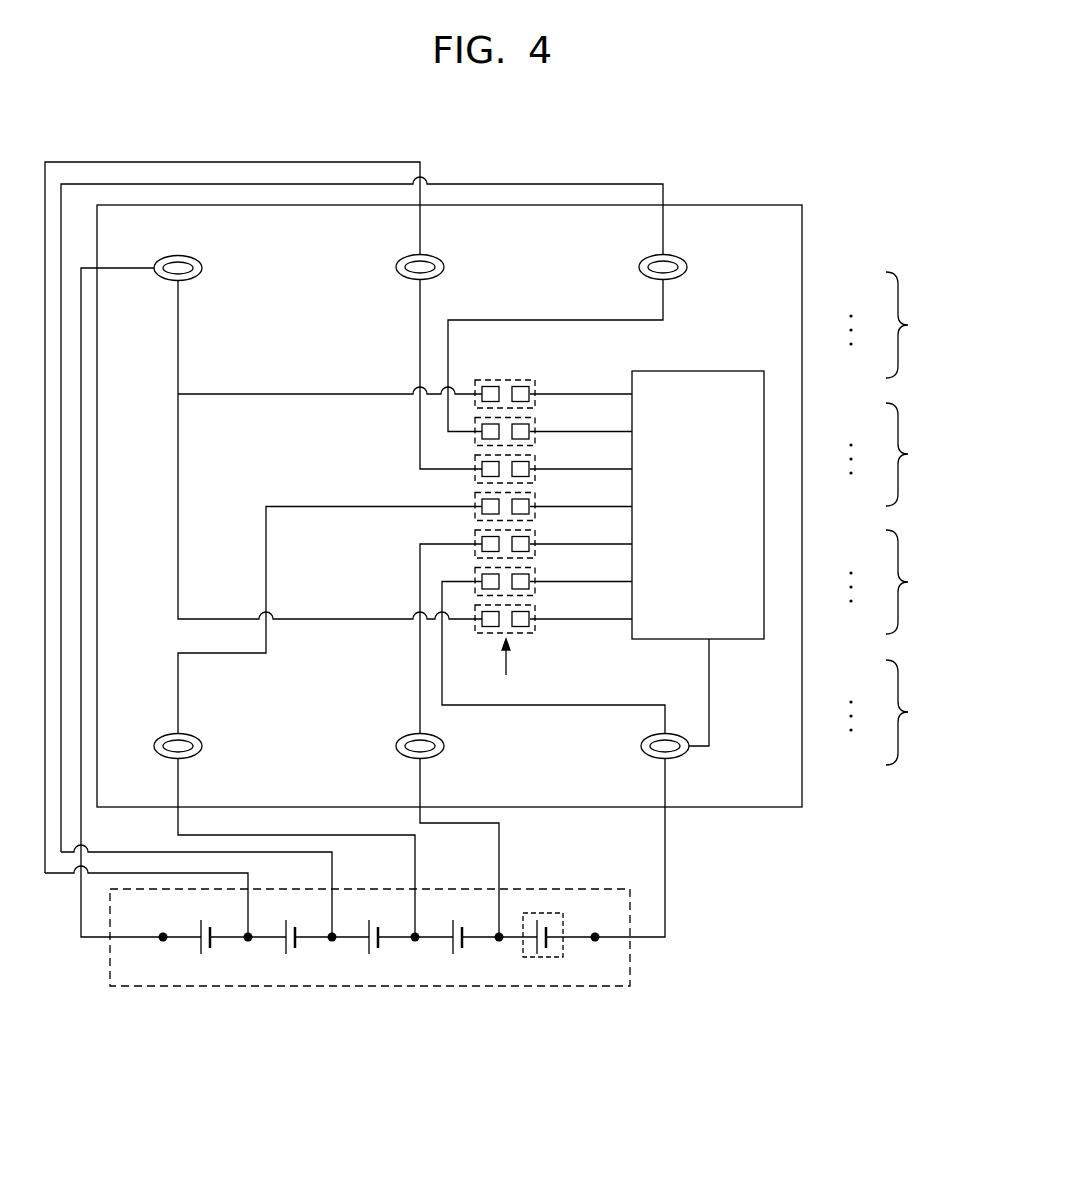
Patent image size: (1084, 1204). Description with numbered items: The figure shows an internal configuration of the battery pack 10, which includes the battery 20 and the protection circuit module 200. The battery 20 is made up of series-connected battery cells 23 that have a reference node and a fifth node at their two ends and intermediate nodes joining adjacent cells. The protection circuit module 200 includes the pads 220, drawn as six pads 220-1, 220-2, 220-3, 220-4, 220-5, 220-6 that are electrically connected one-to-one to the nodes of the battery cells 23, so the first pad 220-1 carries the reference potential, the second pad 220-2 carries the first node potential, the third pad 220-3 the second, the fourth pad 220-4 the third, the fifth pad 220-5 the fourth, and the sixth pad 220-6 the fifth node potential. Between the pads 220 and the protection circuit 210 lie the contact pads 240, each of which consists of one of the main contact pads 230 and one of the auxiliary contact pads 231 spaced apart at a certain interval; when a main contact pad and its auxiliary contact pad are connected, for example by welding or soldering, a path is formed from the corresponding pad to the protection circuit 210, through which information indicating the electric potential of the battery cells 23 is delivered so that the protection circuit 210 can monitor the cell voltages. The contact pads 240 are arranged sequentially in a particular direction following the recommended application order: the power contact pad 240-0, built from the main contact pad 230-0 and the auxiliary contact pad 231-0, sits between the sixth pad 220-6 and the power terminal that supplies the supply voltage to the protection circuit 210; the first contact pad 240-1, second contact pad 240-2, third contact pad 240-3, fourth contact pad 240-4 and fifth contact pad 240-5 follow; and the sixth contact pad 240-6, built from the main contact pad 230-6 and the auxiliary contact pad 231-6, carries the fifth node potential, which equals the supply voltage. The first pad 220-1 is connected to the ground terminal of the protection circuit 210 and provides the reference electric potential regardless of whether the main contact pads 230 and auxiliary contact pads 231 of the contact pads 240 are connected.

The battery pack 10 is at (758, 154).
The battery 20 is at (631, 968).
The battery cells 23 is at (543, 958).
The protection circuit module 200 is at (802, 226).
The protection circuit 210 is at (690, 371).
The pads 220 is at (889, 325).
The first pad 220-1 is at (683, 753).
The second pad 220-2 is at (438, 753).
The third pad 220-3 is at (196, 753).
The fourth pad 220-4 is at (683, 259).
The fifth pad 220-5 is at (440, 259).
The sixth pad 220-6 is at (198, 260).
The contact pads 240 is at (889, 455).
The power contact pad 240-0 is at (536, 610).
The first contact pad 240-1 is at (536, 572).
The second contact pad 240-2 is at (536, 535).
The third contact pad 240-3 is at (536, 498).
The fourth contact pad 240-4 is at (536, 460).
The fifth contact pad 240-5 is at (536, 422).
The sixth contact pad 240-6 is at (536, 385).
The main contact pads 230 is at (889, 582).
The main contact pad of the power contact pad 230-0 is at (488, 633).
The main contact pad of the sixth contact pad 230-6 is at (490, 380).
The auxiliary contact pads 231 is at (889, 712).
The auxiliary contact pad of the power contact pad 231-0 is at (522, 633).
The auxiliary contact pad of the sixth contact pad 231-6 is at (527, 380).